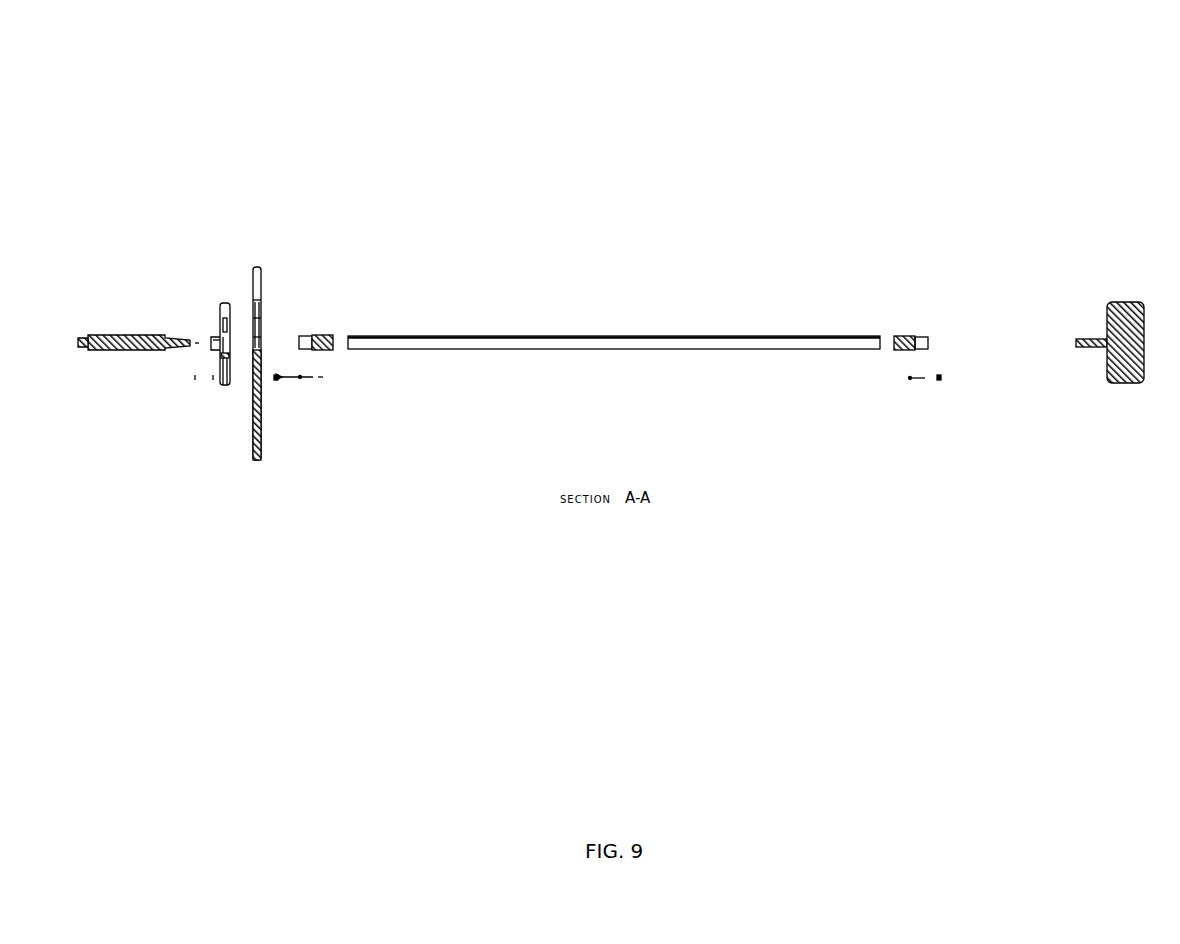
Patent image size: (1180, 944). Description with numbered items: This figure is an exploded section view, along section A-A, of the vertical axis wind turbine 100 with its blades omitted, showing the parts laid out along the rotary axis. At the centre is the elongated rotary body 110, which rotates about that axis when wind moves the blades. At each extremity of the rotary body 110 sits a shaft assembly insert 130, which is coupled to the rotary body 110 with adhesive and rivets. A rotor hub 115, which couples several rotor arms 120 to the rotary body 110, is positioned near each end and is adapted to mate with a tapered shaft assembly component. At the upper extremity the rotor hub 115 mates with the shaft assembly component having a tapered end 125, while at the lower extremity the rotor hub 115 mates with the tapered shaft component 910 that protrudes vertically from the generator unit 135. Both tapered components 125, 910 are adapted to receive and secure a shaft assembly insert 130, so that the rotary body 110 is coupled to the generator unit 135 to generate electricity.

The vertical axis wind turbine 100 is at (1072, 171).
The rotary body 110 is at (435, 335).
The rotor hub 115 is at (225, 303).
The rotor arm 120 is at (255, 265).
The shaft assembly component having a tapered end 125 is at (97, 333).
The shaft assembly insert 130 is at (317, 335).
The generator unit 135 is at (1127, 384).
The tapered shaft component 910 is at (1092, 348).